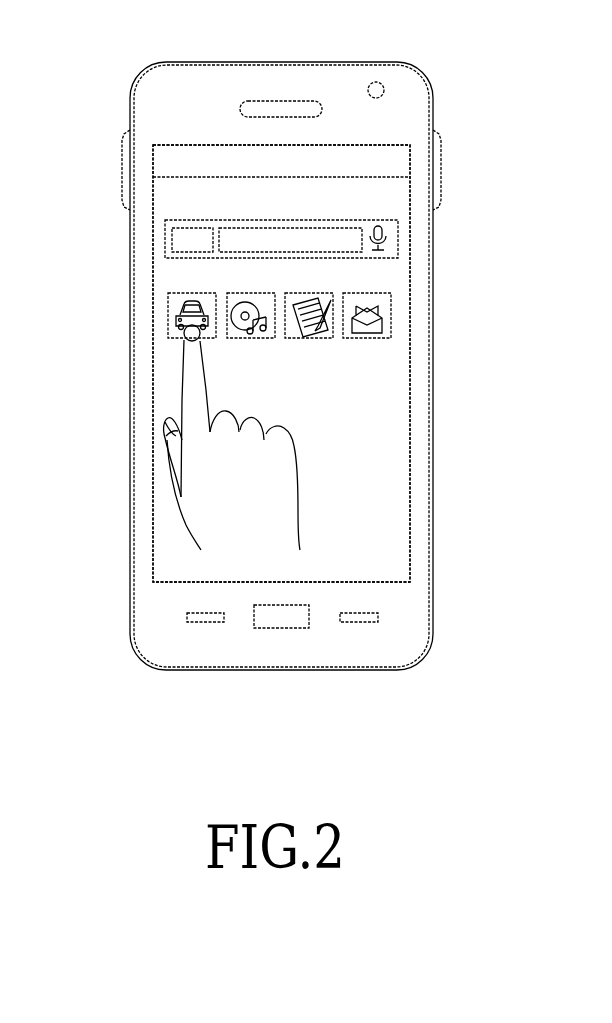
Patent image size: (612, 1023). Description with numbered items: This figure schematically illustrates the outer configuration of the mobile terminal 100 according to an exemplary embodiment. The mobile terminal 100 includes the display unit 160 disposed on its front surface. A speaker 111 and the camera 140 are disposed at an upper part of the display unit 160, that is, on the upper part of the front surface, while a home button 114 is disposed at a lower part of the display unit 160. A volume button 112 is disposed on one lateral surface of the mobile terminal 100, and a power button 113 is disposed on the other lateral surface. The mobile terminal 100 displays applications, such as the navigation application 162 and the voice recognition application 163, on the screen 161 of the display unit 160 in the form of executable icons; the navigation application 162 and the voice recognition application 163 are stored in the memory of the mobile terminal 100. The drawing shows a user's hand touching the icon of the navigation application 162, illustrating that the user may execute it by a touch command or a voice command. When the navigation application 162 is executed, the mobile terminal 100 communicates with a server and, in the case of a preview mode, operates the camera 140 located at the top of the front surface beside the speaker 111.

The mobile terminal 100 is at (438, 76).
The speaker 111 is at (281, 100).
The camera 140 is at (375, 82).
The volume button 112 is at (122, 168).
The power button 113 is at (441, 172).
The home button 114 is at (281, 628).
The display unit 160 is at (411, 364).
The screen 161 is at (393, 440).
The navigation application 162 is at (168, 315).
The voice recognition application 163 is at (398, 240).